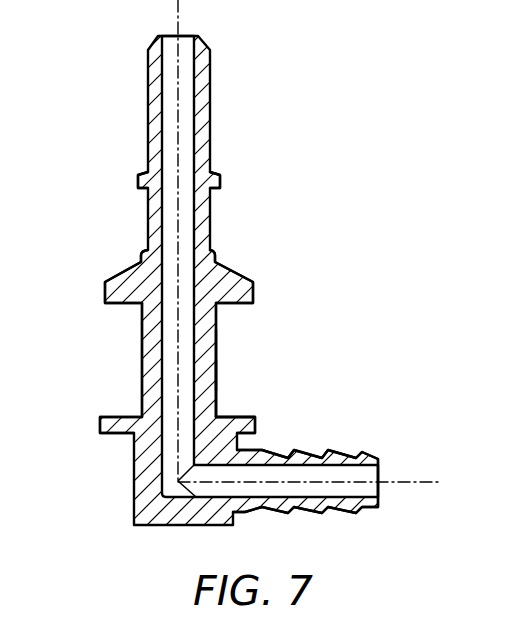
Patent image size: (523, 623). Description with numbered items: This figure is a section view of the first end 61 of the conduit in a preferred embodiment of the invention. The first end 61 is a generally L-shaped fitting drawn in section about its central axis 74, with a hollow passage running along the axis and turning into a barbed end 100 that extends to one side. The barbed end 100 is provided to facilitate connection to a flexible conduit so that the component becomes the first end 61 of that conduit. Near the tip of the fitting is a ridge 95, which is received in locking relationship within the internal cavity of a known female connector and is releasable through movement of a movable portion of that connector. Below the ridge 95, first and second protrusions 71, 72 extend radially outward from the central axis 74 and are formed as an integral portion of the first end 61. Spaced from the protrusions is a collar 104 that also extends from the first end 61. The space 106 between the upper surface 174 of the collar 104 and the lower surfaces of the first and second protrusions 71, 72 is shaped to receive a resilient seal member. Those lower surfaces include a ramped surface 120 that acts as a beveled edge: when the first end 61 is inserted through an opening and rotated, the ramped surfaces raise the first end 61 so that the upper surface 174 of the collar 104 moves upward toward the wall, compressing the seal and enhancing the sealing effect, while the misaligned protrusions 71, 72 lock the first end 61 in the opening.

The first end 61 is at (323, 249).
The central axis 74 is at (178, 27).
The ridge 95 is at (220, 183).
The second protrusion 72 is at (107, 293).
The first protrusion 71 is at (250, 297).
The ramped surface 120 is at (227, 310).
The space 106 is at (93, 303).
The upper surface 174 is at (237, 417).
The collar 104 is at (257, 425).
The barbed end 100 is at (300, 512).